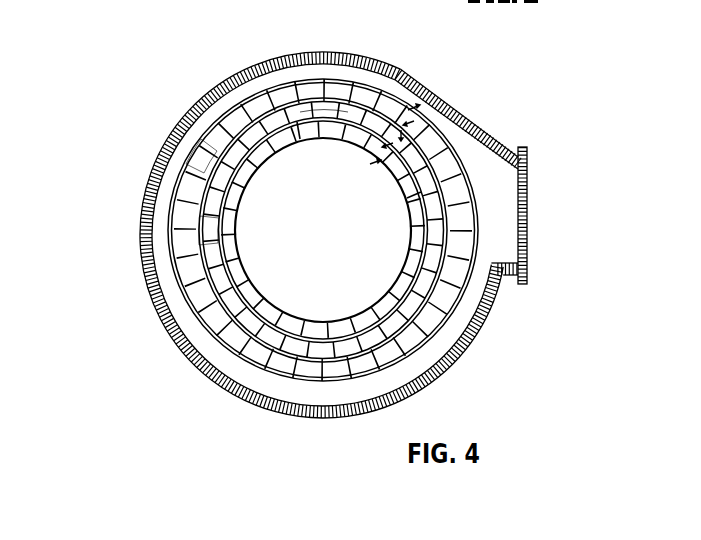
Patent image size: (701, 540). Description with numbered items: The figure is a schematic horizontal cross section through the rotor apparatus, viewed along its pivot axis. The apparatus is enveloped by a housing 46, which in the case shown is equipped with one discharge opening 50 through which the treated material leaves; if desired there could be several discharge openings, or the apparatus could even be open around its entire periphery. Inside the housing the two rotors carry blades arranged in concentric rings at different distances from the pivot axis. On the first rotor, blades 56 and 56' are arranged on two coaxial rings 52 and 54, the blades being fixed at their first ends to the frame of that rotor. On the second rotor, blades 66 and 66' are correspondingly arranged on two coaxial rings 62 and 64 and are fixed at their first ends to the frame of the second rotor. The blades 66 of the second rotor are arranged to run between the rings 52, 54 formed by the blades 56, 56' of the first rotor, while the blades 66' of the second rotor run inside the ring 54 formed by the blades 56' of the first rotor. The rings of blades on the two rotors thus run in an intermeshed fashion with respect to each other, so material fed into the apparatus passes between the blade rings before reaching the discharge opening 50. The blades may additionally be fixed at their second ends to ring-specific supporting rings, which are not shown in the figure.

The housing 46 is at (143, 202).
The discharge opening 50 is at (527, 212).
The ring 52 is at (229, 130).
The ring 54 is at (220, 202).
The blades 56 is at (155, 149).
The blades 56' is at (248, 230).
The ring 62 is at (277, 117).
The ring 64 is at (302, 143).
The blades 66 is at (310, 60).
The blades 66' is at (394, 218).